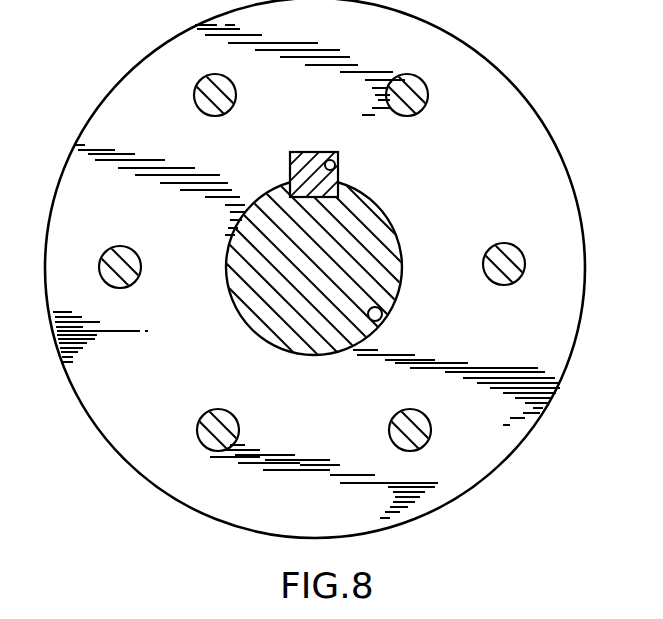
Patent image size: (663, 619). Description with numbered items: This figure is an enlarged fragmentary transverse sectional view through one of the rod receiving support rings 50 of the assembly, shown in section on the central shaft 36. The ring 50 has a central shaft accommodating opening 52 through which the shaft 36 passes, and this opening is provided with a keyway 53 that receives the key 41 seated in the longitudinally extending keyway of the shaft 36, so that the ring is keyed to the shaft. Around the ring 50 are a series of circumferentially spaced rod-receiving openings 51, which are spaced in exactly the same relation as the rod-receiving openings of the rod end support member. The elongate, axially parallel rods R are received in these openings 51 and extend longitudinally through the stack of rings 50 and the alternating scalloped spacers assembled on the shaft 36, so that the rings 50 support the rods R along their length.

The central shaft 36 is at (390, 267).
The key 41 is at (292, 163).
The rod receiving support ring 50 is at (330, 414).
The rod-receiving openings 51 is at (497, 283).
The central shaft accommodating opening 52 is at (382, 318).
The keyway 53 is at (337, 167).
The rods R is at (423, 90).